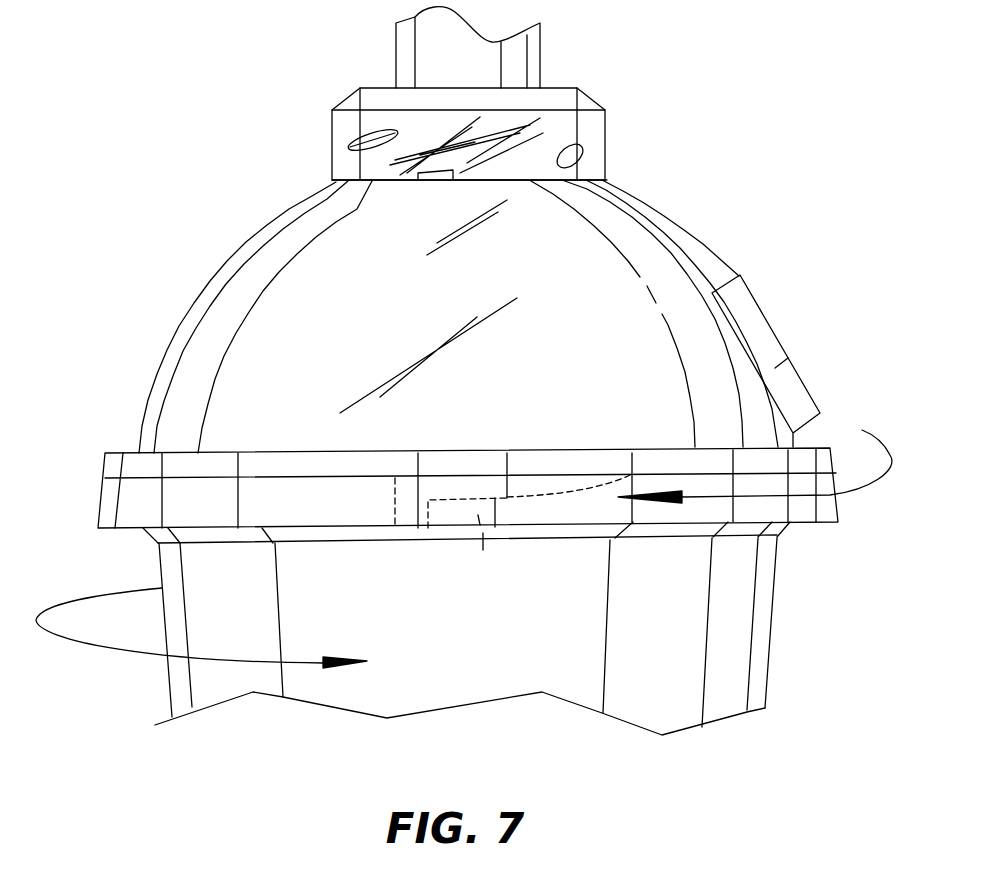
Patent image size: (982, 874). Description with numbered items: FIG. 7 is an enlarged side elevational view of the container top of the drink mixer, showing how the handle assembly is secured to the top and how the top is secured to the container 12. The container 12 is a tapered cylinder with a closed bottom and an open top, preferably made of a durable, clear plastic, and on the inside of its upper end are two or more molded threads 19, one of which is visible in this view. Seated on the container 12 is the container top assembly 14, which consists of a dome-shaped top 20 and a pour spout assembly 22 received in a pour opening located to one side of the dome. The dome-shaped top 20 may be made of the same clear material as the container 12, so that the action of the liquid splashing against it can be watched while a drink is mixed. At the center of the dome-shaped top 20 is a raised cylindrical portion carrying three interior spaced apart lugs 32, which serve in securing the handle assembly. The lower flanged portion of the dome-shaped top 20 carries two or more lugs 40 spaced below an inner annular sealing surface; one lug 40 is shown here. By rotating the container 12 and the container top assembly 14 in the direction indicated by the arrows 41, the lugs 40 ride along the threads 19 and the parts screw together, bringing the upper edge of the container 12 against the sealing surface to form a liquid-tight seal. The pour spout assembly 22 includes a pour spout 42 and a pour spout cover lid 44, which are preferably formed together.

The container 12 is at (743, 637).
The container top assembly 14 is at (511, 305).
The molded threads 19 is at (465, 498).
The dome-shaped top 20 is at (610, 260).
The pour spout assembly 22 is at (798, 351).
The interior spaced apart lugs 32 is at (448, 185).
The lugs 40 is at (481, 562).
The arrows 41 is at (300, 660).
The pour spout 42 is at (753, 313).
The pour spout cover lid 44 is at (805, 393).